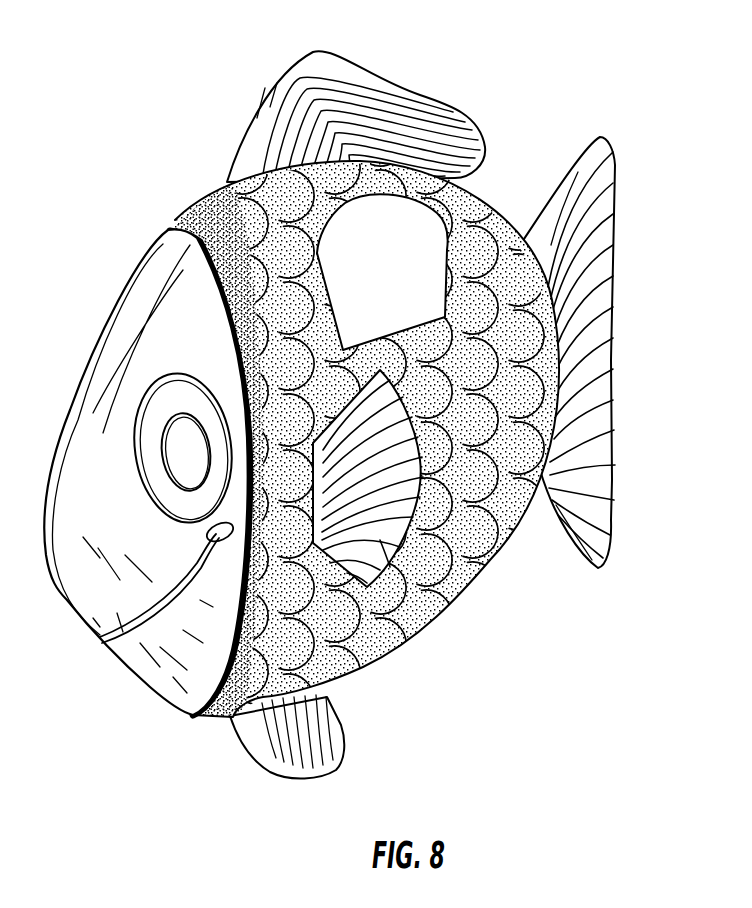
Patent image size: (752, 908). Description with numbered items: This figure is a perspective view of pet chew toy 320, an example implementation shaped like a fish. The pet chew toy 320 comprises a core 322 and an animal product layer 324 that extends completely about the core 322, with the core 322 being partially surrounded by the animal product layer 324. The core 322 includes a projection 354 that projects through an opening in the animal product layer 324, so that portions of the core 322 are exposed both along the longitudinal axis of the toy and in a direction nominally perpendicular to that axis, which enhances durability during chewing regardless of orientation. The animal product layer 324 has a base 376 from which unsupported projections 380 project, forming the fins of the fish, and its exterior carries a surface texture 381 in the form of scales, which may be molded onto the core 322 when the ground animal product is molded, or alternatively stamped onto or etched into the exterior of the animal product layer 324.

The pet chew toy 320 is at (111, 132).
The core 322 is at (122, 284).
The animal product layer 324 is at (208, 188).
The projection 354 is at (440, 620).
The base 376 is at (401, 657).
The unsupported projections 380 is at (406, 96).
The surface texture 381 is at (493, 563).